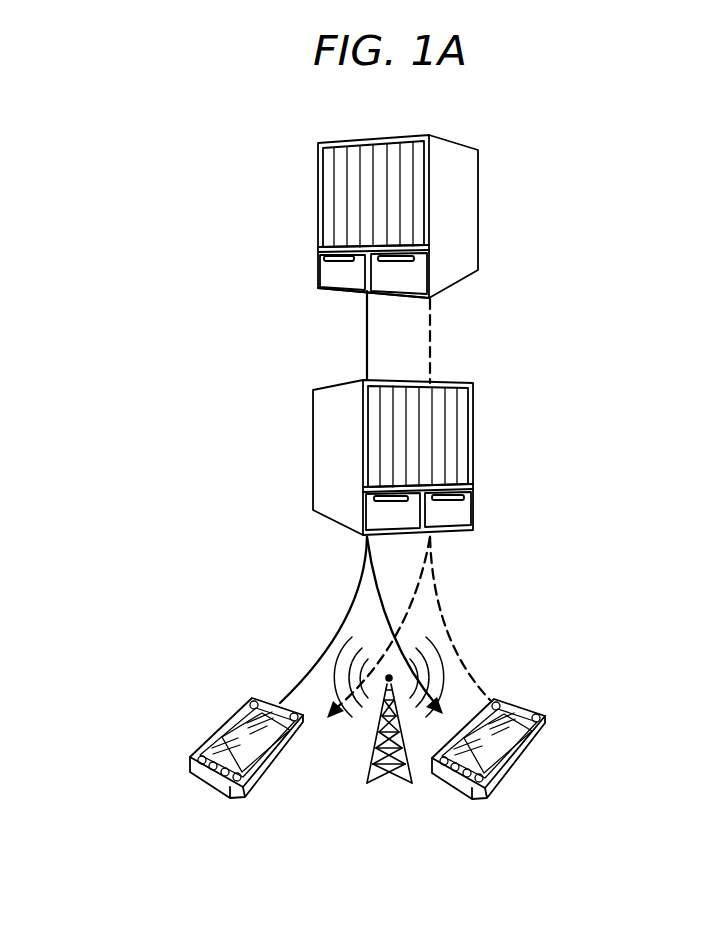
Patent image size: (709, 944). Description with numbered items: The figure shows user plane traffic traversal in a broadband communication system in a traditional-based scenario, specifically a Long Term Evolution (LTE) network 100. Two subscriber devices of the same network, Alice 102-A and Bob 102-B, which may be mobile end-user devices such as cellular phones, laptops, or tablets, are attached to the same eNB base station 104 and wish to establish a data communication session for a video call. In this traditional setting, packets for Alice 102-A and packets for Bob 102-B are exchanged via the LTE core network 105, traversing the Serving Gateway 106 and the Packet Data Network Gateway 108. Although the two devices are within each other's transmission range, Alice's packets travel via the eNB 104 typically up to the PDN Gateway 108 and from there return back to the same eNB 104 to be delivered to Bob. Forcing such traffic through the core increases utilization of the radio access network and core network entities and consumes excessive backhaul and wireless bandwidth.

The Long Term Evolution (LTE) network 100 is at (580, 148).
The LTE core network (CN) 105 is at (288, 537).
The Packet Data Network (PDN) Gateway (PGW) 108 is at (478, 213).
The Serving Gateway (SGW) 106 is at (475, 457).
The eNB base station (e-Node B) 104 is at (369, 770).
The Alice device 102-A is at (213, 733).
The Bob device 102-B is at (525, 748).